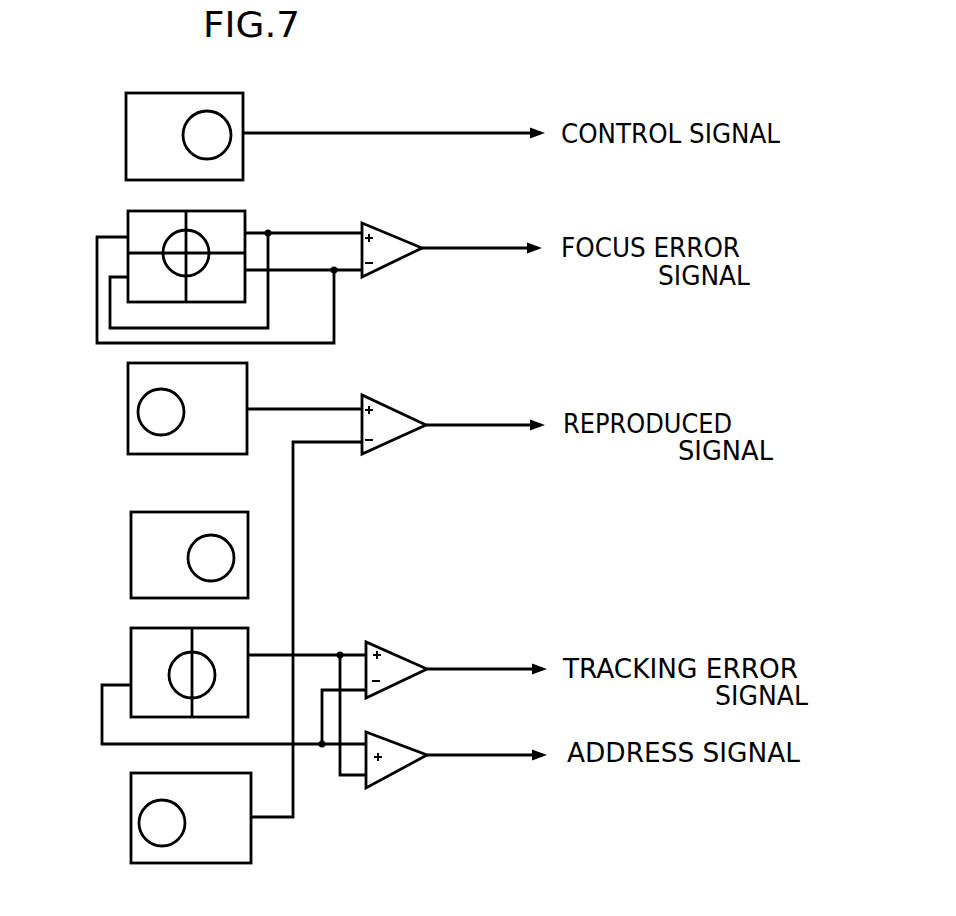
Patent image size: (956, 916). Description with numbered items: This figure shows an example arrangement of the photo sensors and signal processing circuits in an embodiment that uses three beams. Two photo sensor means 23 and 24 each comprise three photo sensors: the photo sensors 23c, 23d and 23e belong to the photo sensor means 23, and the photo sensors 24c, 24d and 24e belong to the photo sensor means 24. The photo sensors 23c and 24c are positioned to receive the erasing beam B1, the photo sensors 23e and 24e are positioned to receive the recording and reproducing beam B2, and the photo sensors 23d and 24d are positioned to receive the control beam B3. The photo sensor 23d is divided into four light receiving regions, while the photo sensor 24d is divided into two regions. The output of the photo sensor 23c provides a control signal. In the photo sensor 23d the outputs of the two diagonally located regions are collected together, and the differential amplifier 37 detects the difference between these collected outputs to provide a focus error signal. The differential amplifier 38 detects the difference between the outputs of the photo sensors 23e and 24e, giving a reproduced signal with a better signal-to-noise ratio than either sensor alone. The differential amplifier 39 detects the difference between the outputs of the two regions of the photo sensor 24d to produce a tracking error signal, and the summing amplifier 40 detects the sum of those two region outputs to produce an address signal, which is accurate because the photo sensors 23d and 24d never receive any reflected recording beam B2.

The photo sensor means 23 is at (68, 101).
The photo sensor 23c is at (126, 118).
The photo sensor 23d is at (128, 215).
The photo sensor 23e is at (128, 420).
The photo sensor means 24 is at (72, 516).
The photo sensor 24c is at (131, 536).
The photo sensor 24d is at (131, 641).
The photo sensor 24e is at (131, 793).
The differential amplifier 37 is at (402, 230).
The differential amplifier 38 is at (407, 415).
The differential amplifier 39 is at (418, 664).
The summing amplifier 40 is at (418, 750).
The erasing beam B1 is at (222, 125).
The recording and reproducing beam B2 is at (168, 428).
The control beam B3 is at (200, 247).